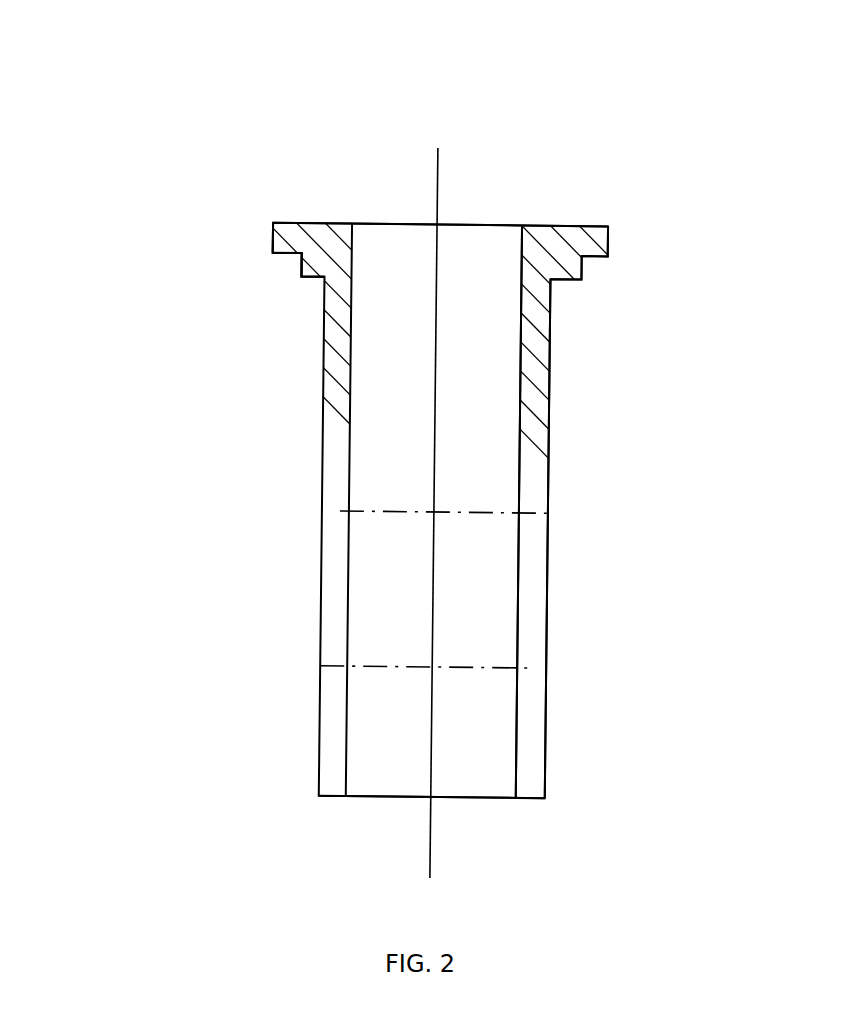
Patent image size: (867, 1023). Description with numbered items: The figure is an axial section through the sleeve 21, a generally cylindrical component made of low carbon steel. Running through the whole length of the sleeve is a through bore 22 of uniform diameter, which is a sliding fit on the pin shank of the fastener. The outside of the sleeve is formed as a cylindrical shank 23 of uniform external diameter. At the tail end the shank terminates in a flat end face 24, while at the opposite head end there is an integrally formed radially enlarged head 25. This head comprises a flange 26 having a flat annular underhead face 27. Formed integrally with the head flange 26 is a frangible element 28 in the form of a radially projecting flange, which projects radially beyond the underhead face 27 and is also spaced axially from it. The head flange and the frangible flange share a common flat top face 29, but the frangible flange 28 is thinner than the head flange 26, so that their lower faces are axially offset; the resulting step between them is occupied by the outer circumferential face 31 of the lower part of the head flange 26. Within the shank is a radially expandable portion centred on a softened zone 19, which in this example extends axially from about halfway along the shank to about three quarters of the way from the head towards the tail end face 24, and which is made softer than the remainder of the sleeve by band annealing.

The softened zone 19 is at (310, 661).
The sleeve 21 is at (583, 493).
The through bore 22 is at (517, 606).
The cylindrical shank 23 is at (549, 444).
The flat end face 24 is at (527, 800).
The radially enlarged head 25 is at (567, 228).
The flange 26 is at (323, 222).
The flat annular underhead face 27 is at (316, 281).
The frangible element 28 is at (278, 240).
The common flat top face 29 is at (487, 226).
The outer circumferential face 31 is at (298, 268).